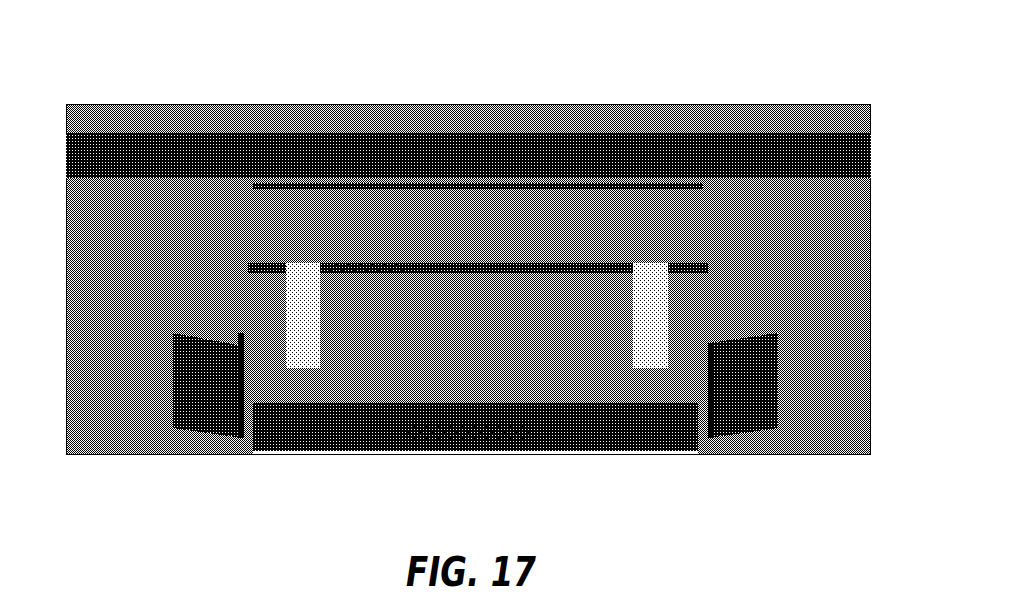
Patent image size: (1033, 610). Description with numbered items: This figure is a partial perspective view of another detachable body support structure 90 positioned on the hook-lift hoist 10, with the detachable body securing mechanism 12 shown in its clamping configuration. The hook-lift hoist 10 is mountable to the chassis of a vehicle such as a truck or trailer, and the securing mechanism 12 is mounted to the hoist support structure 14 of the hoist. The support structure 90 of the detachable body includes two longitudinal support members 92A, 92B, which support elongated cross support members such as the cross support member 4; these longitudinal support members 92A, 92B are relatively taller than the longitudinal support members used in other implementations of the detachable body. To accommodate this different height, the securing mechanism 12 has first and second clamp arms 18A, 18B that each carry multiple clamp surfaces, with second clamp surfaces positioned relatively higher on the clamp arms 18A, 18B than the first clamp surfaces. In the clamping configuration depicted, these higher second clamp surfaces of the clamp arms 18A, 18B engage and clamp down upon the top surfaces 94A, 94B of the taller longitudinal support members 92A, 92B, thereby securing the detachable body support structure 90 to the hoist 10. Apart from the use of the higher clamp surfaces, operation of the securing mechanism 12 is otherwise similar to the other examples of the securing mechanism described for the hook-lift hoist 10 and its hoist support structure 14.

The hook-lift hoist 10 is at (662, 469).
The cross support member 4 is at (78, 127).
The detachable body support structure 90 is at (214, 122).
The first clamp arm 18A is at (228, 175).
The second clamp arm 18B is at (700, 170).
The top surface 94A is at (207, 263).
The top surface 94B is at (718, 224).
The longitudinal support member 92A is at (195, 316).
The longitudinal support member 92B is at (736, 282).
The detachable body securing mechanism 12 is at (361, 266).
The hoist support structure 14 is at (413, 340).